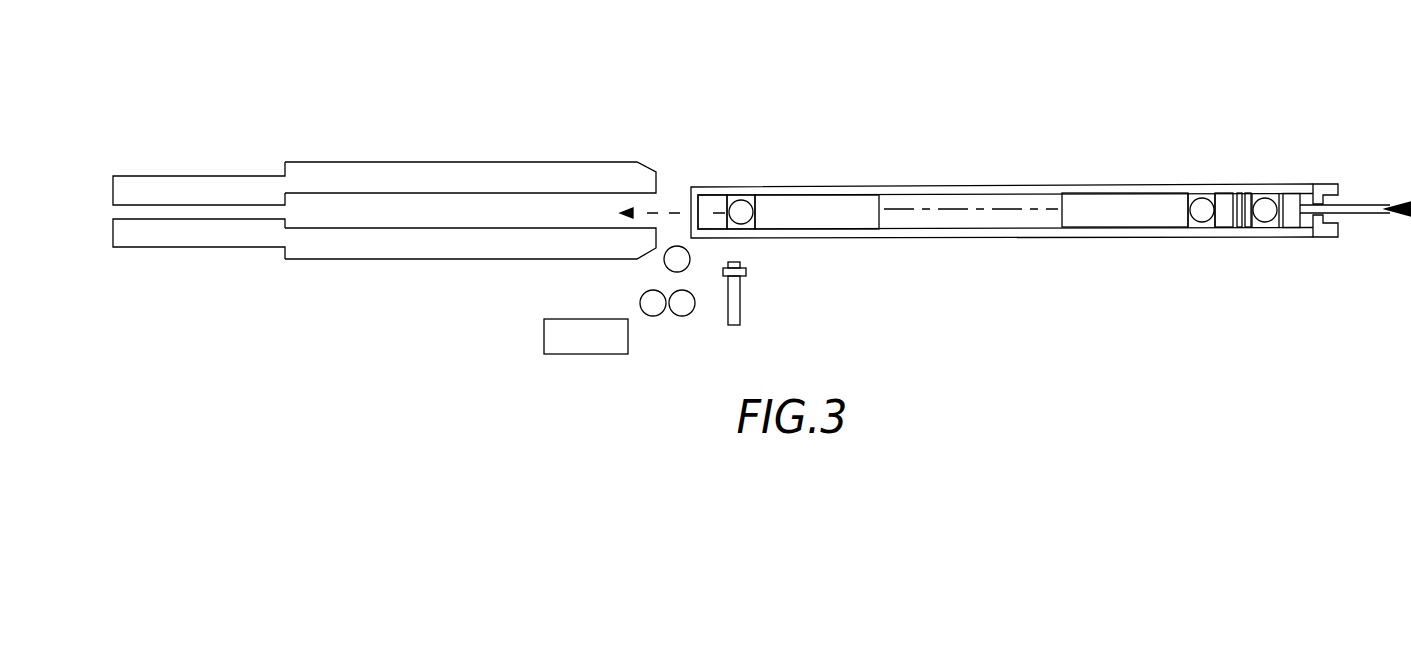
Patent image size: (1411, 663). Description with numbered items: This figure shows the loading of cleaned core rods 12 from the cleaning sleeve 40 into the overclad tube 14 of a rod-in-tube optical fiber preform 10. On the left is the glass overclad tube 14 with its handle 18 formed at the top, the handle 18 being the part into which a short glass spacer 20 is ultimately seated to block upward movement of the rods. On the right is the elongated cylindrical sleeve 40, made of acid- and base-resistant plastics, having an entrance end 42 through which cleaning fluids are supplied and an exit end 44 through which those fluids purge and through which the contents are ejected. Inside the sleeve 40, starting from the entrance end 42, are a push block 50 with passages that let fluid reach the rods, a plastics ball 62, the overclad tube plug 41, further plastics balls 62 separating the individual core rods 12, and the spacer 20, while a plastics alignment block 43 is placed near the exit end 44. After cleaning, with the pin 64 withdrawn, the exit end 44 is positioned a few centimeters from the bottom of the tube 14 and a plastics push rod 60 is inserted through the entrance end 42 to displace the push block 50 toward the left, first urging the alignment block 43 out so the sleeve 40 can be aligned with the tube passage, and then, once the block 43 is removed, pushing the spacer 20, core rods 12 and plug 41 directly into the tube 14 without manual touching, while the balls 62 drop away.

The rod-in-tube optical fiber preform 10 is at (384, 188).
The core rod 12 is at (828, 203).
The overclad tube 14 is at (447, 261).
The handle 18 is at (194, 248).
The spacer 20 is at (713, 202).
The sleeve 40 is at (1025, 236).
The overclad tube plug 41 is at (1228, 203).
The entrance end 42 is at (1328, 185).
The alignment block 43 is at (575, 343).
The exit end 44 is at (710, 195).
The push block 50 is at (1286, 221).
The push rod 60 is at (1370, 214).
The plastics ball 62 is at (744, 210).
The pin 64 is at (741, 307).